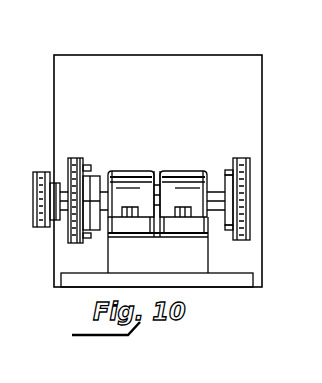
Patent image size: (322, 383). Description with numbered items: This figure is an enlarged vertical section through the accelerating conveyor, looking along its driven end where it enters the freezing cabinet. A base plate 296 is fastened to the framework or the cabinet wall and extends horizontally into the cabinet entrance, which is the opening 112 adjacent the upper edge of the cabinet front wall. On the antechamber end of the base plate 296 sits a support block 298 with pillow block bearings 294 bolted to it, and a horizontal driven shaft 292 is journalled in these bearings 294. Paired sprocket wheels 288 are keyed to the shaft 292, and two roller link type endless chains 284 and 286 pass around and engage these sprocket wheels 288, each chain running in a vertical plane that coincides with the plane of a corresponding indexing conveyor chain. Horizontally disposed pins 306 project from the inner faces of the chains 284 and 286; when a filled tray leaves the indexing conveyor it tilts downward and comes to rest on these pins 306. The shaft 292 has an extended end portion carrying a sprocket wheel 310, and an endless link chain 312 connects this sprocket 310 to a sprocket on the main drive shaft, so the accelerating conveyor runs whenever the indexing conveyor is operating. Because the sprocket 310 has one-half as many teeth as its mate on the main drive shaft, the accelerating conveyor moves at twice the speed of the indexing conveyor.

The opening 112 is at (204, 57).
The roller link type endless chain 284 is at (72, 158).
The roller link type endless chain 286 is at (246, 148).
The sprocket wheels 288 is at (97, 176).
The driven shaft 292 is at (218, 193).
The pillow block bearings 294 is at (161, 171).
The base plate 296 is at (236, 281).
The support block 298 is at (168, 258).
The pins 306 is at (226, 167).
The sprocket wheel 310 is at (52, 183).
The endless link chain 312 is at (33, 176).